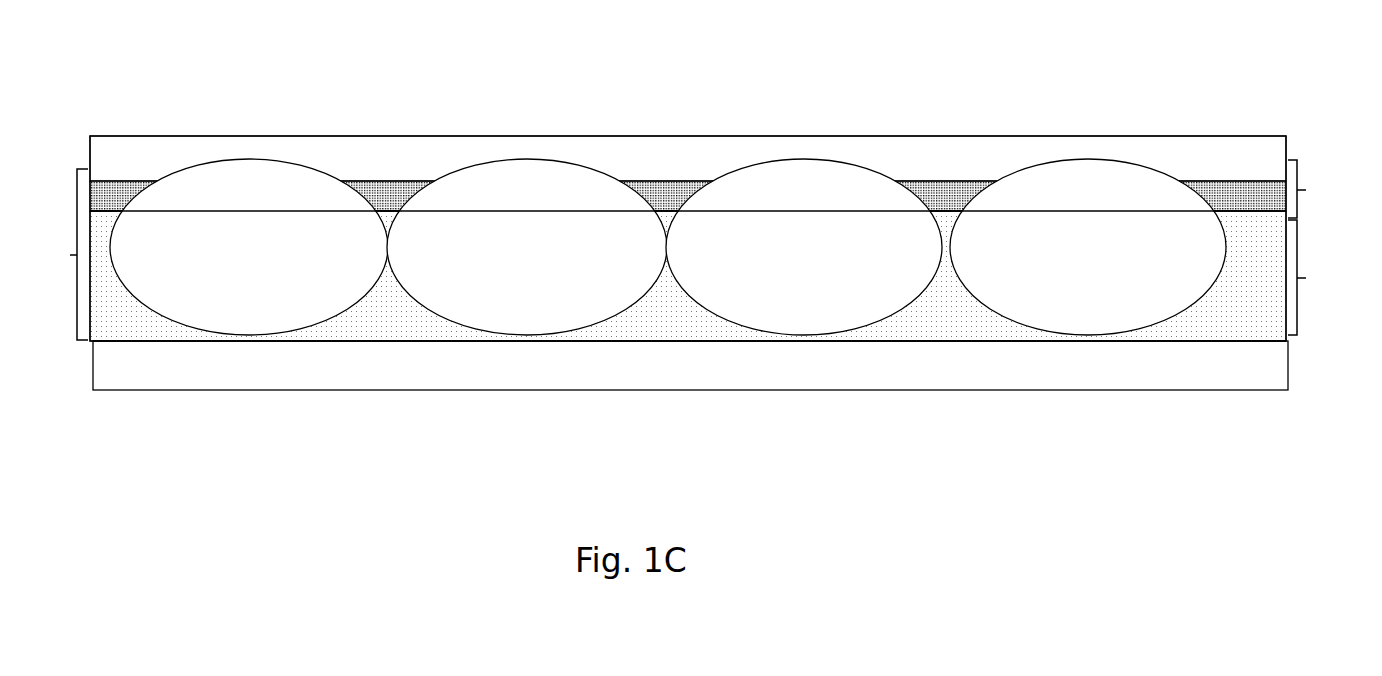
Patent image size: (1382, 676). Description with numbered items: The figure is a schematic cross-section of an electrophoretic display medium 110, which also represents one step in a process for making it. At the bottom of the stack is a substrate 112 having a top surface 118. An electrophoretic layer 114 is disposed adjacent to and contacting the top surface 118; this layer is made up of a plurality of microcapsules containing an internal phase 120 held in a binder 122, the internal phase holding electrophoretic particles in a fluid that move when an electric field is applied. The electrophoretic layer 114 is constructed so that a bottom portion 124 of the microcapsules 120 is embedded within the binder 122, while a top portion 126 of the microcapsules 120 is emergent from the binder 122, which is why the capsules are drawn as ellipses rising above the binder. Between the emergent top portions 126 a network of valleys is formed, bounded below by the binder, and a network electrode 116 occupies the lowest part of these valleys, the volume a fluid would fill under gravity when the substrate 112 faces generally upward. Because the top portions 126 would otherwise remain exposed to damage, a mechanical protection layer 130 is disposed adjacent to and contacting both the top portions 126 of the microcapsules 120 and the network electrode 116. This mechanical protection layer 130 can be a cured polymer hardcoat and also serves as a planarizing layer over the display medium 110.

The electrophoretic display medium 110 is at (178, 79).
The substrate 112 is at (248, 371).
The electrophoretic layer 114 is at (50, 254).
The network electrode 116 is at (390, 198).
The top surface 118 is at (150, 350).
The microcapsules containing an internal phase 120 is at (338, 182).
The binder 122 is at (657, 317).
The bottom portion 124 is at (1325, 277).
The top portion 126 is at (1325, 189).
The mechanical protection layer 130 is at (485, 152).